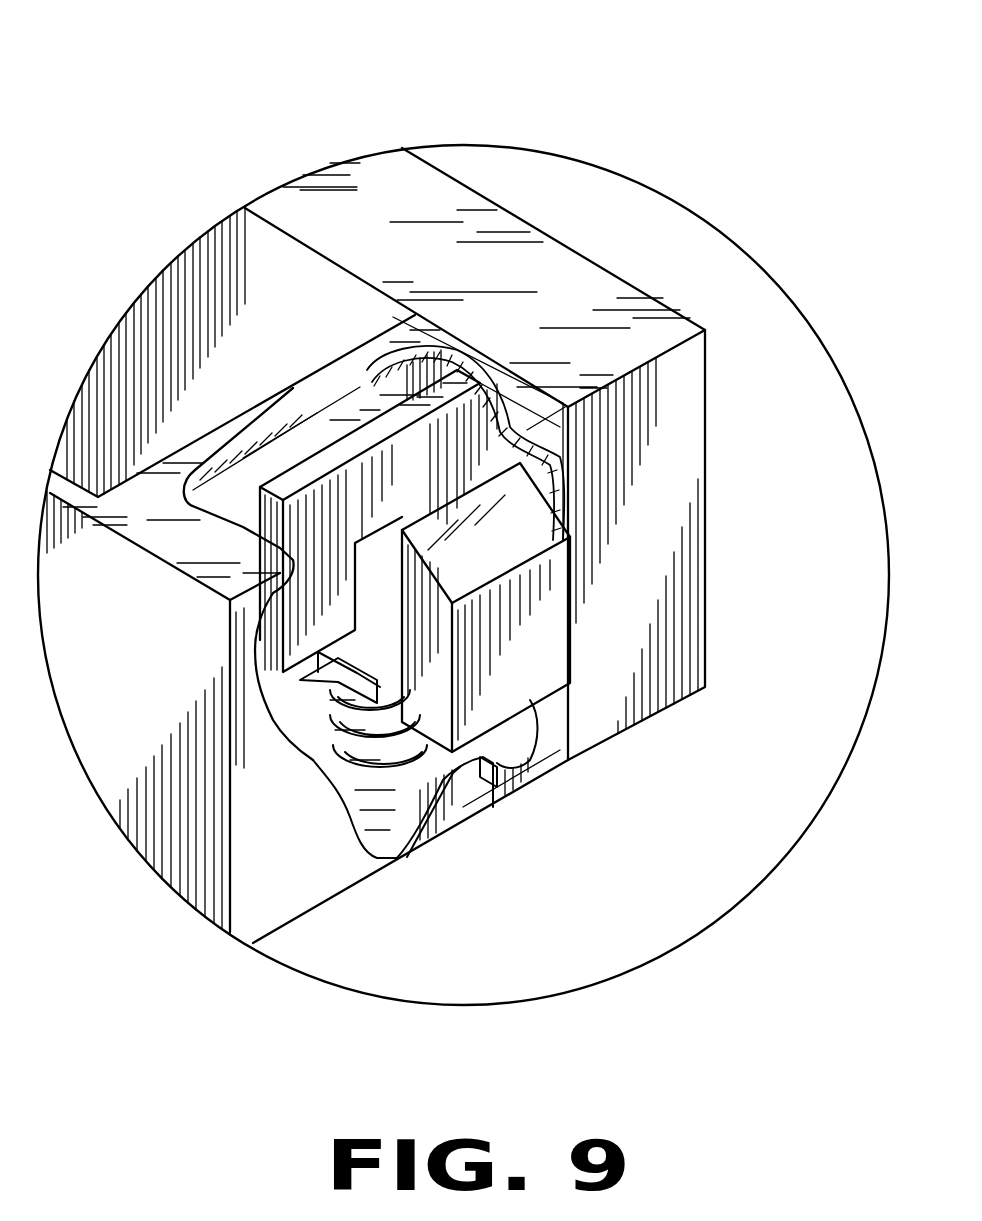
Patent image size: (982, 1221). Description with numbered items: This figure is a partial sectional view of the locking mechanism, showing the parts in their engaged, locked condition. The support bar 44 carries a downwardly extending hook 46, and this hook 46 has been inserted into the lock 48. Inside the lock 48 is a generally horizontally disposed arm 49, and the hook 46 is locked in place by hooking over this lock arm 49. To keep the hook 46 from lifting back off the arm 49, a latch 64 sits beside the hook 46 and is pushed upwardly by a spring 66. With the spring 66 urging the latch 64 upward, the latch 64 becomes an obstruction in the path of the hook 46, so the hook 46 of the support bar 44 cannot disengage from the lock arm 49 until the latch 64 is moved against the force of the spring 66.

The support bar 44 is at (482, 200).
The hook 46 is at (407, 413).
The lock 48 is at (120, 507).
The arm 49 is at (300, 443).
The latch 64 is at (550, 527).
The spring 66 is at (430, 757).